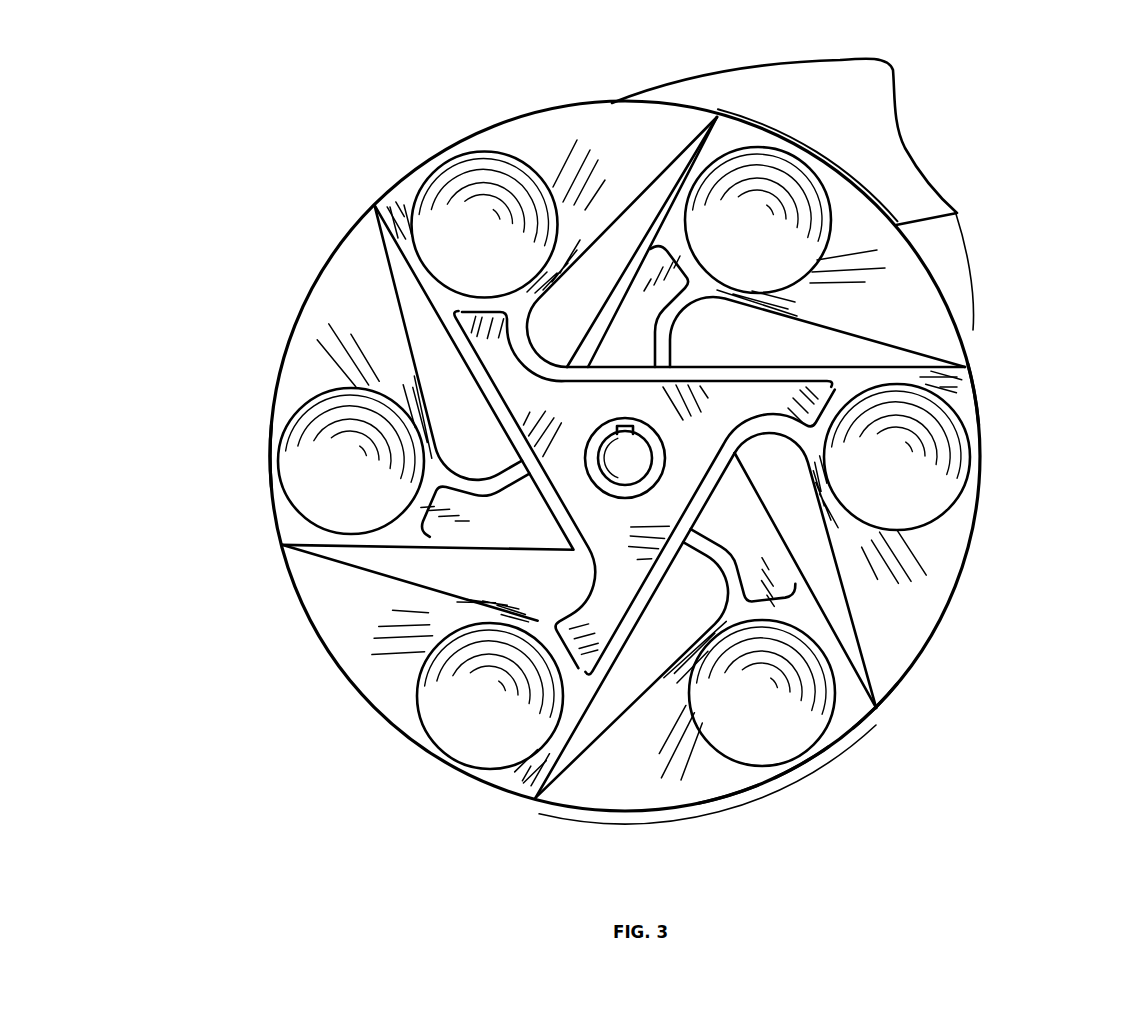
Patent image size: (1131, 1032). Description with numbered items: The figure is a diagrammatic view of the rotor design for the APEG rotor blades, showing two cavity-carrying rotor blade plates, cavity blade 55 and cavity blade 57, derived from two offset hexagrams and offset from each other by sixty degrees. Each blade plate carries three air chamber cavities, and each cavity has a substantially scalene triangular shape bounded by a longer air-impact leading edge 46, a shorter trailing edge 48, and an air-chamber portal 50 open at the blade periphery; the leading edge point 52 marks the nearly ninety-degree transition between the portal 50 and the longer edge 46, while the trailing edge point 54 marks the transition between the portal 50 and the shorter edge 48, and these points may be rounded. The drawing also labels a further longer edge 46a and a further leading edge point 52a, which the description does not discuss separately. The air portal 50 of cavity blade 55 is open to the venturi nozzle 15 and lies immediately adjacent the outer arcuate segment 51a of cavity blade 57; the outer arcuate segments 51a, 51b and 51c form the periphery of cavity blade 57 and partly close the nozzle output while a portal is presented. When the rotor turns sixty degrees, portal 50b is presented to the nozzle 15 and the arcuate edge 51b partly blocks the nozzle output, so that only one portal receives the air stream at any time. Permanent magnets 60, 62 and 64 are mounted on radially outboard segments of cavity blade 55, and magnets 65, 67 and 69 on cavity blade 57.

The venturi nozzle 15 is at (750, 67).
The longer edge 46 is at (800, 360).
The vane 46a is at (832, 627).
The shorter edge 48 is at (605, 238).
The air-chamber portal 50 is at (956, 212).
The air portal 50b is at (550, 812).
The outer arcuate segment 51a is at (942, 295).
The outer arcuate segment 51b is at (768, 791).
The outer arcuate segment 51c is at (272, 405).
The leading edge point 52 is at (967, 373).
The joint 52a is at (880, 712).
The trailing edge point 54 is at (715, 106).
The cavity blade 55 is at (980, 490).
The cavity blade 57 is at (811, 766).
The permanent magnet 60 is at (818, 462).
The permanent magnet 62 is at (512, 618).
The permanent magnet 64 is at (552, 258).
The permanent magnet 65 is at (738, 296).
The permanent magnet 67 is at (718, 628).
The permanent magnet 69 is at (420, 443).